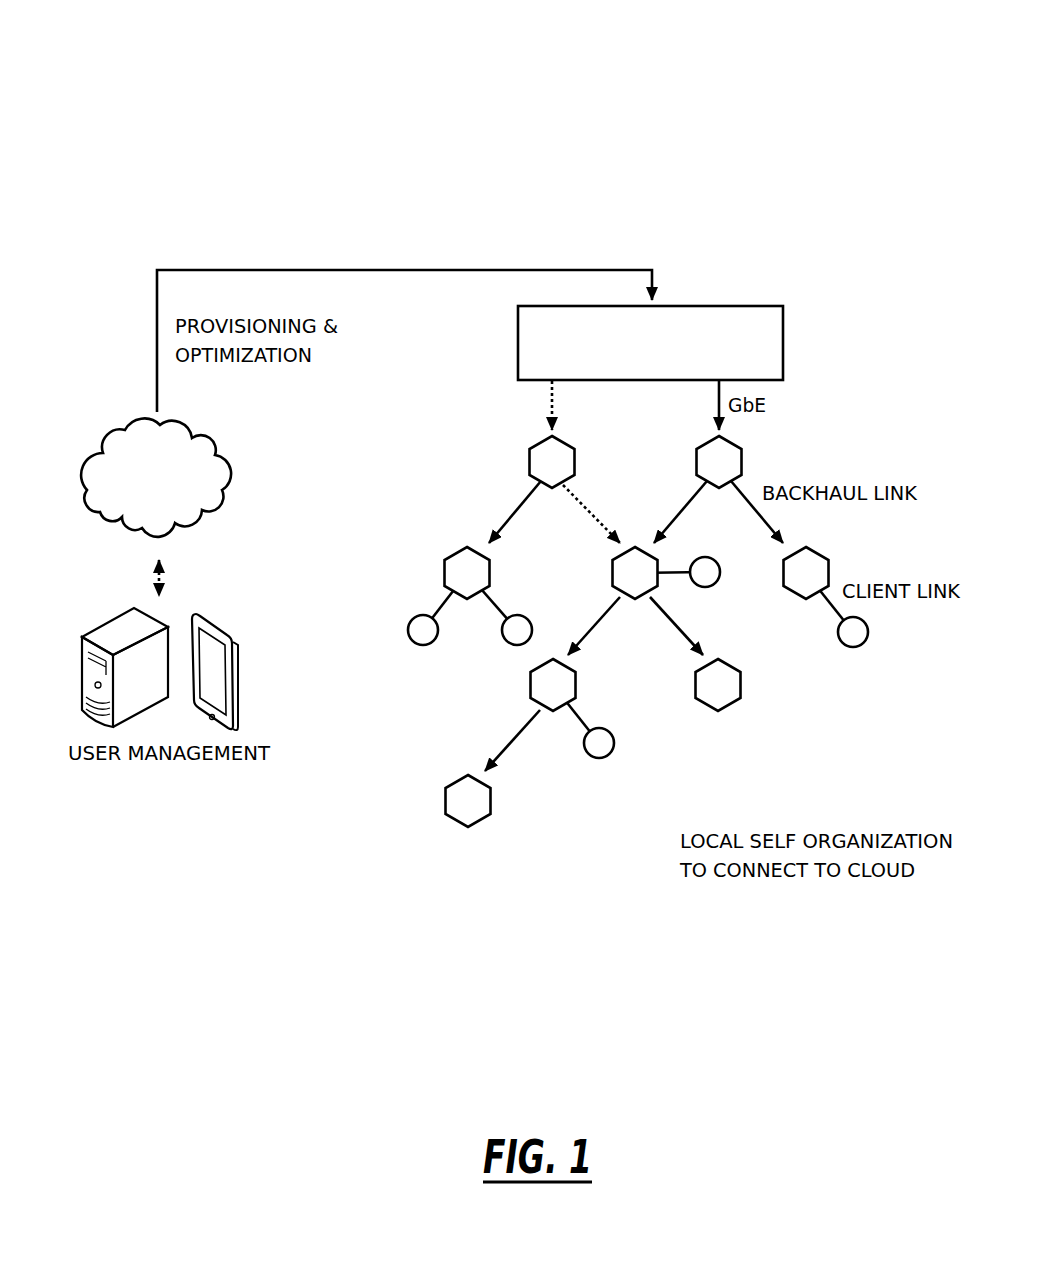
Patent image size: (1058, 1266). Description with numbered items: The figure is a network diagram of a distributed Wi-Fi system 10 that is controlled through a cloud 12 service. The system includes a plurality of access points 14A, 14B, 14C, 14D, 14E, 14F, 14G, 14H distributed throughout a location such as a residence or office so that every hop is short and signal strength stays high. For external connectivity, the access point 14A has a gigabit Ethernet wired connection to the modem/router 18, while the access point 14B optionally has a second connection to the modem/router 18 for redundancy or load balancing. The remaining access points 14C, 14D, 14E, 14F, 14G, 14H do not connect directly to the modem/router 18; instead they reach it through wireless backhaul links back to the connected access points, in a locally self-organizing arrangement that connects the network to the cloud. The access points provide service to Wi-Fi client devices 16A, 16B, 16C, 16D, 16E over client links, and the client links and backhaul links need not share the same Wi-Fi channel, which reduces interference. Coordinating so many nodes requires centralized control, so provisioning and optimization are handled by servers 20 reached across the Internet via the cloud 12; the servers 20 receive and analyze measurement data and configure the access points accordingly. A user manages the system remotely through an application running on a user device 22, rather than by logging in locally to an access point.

The distributed Wi-Fi system 10 is at (524, 66).
The cloud 12 is at (231, 468).
The access point 14A is at (742, 465).
The access point 14B is at (575, 465).
The access point 14C is at (490, 578).
The access point 14D is at (613, 566).
The access point 14E is at (829, 567).
The access point 14F is at (576, 690).
The access point 14G is at (697, 690).
The access point 14H is at (446, 810).
The Wi-Fi client device 16A is at (410, 641).
The Wi-Fi client device 16B is at (504, 642).
The Wi-Fi client device 16C is at (719, 579).
The Wi-Fi client device 16D is at (840, 644).
The Wi-Fi client device 16E is at (585, 755).
The modem/router 18 is at (762, 305).
The servers 20 is at (82, 667).
The user device 22 is at (238, 665).